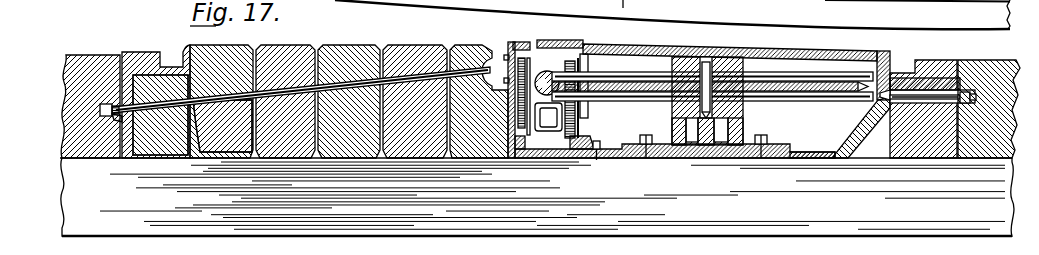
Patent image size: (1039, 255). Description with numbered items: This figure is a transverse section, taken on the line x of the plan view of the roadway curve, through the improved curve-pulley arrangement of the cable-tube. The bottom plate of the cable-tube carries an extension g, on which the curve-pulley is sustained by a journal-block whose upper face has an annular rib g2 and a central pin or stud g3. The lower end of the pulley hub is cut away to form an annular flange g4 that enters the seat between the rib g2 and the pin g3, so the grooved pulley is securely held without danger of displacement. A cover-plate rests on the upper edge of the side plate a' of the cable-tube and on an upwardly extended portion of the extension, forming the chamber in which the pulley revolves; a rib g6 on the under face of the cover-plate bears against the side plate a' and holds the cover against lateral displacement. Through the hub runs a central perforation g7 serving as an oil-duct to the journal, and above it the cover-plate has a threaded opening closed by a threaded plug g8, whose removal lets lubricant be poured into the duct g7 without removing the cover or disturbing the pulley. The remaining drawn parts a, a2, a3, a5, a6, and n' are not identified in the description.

The section line x x is at (623, 21).
The rib g6 is at (590, 43).
The threaded plug g8 is at (705, 60).
The bracket block a3 is at (734, 66).
The top plate a6 is at (836, 45).
The diagonal strut a5 is at (861, 127).
The post n' is at (589, 89).
The extension g is at (645, 137).
The central perforation g7 is at (672, 124).
The annular rib g2 is at (741, 124).
The annular flange g4 is at (688, 150).
The central pin or stud g3 is at (704, 148).
The side plate a' is at (812, 141).
The fork rods a2 is at (836, 101).
The base plate a is at (675, 163).